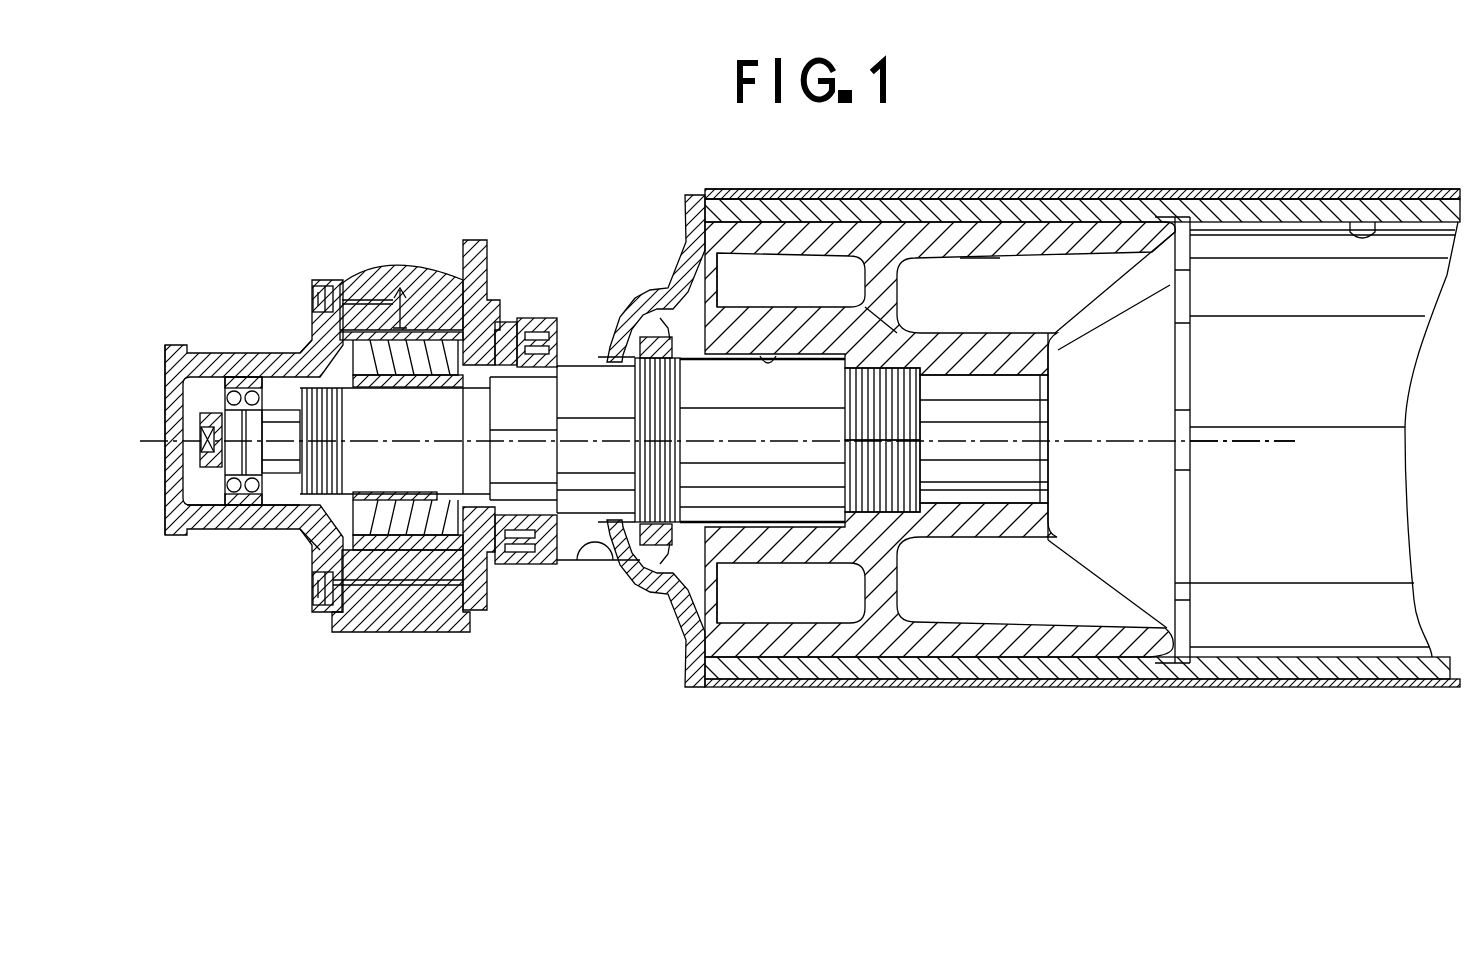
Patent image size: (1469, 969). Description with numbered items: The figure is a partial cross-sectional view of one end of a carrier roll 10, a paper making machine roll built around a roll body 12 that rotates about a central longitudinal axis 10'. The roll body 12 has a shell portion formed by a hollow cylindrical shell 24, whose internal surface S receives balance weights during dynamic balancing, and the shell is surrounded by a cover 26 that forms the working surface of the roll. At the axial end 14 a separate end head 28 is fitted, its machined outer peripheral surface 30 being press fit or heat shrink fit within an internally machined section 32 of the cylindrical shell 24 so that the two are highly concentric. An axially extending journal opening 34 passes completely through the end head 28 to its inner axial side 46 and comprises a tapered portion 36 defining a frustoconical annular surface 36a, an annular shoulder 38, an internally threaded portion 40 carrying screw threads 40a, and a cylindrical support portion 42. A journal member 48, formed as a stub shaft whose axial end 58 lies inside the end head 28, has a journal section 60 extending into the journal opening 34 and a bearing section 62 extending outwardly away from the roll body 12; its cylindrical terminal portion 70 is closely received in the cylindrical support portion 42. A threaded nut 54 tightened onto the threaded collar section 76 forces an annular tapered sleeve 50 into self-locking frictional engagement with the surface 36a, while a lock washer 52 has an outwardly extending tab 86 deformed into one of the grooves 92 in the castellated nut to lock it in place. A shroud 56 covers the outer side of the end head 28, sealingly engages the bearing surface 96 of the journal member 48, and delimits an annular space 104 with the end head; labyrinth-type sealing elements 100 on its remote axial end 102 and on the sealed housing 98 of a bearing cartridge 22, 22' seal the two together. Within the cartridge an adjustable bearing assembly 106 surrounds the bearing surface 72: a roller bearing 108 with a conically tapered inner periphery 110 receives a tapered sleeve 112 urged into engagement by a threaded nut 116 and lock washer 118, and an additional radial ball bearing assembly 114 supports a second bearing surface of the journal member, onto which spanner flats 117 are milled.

The carrier roll 10 is at (1082, 475).
The central longitudinal axis 10' is at (1244, 411).
The roll body 12 is at (982, 190).
The axial end 14 is at (800, 690).
The bearing cartridge 22 is at (293, 277).
The bolt 22' is at (337, 602).
The cylindrical shell 24 is at (1250, 688).
The cover 26 is at (1000, 680).
The end head 28 is at (1117, 368).
The outer peripheral surface 30 is at (920, 198).
The internally machined section 32 is at (1052, 200).
The journal opening 34 is at (893, 522).
The tapered portion 36 is at (740, 545).
The internal axially extending annular surface 36a is at (768, 362).
The annular shoulder 38 is at (805, 545).
The internally threaded portion 40 is at (893, 357).
The screw threads 40a is at (920, 387).
The cylindrical support portion 42 is at (990, 340).
The inner axial side 46 is at (1185, 470).
The journal member 48 is at (600, 350).
The tapered sleeve 50 is at (731, 345).
The lock washer 52 is at (672, 318).
The threaded nut 54 is at (625, 532).
The shroud 56 is at (672, 624).
The axial end 58 is at (1078, 436).
The journal section 60 is at (855, 375).
The bearing section 62 is at (497, 552).
The cylindrical terminal portion 70 is at (1030, 450).
The bearing surface 72 is at (436, 435).
The threaded collar section 76 is at (640, 437).
The outwardly extending tab 86 is at (662, 594).
The grooves 92 is at (650, 548).
The bearing surface 96 is at (598, 348).
The sealed housing 98 is at (470, 250).
The labyrinth-type sealing elements 100 is at (510, 322).
The remote axial end 102 is at (583, 350).
The annular space 104 is at (690, 290).
The adjustable bearing assembly 106 is at (308, 370).
The roller bearing 108 is at (425, 290).
The conically tapered inner periphery 110 is at (400, 388).
The tapered sleeve 112 is at (333, 355).
The radial ball bearing assembly 114 is at (218, 380).
The threaded nut 116 is at (262, 548).
The spanner flats 117 is at (172, 443).
The lock washer 118 is at (312, 545).
The internal surface S is at (1362, 212).